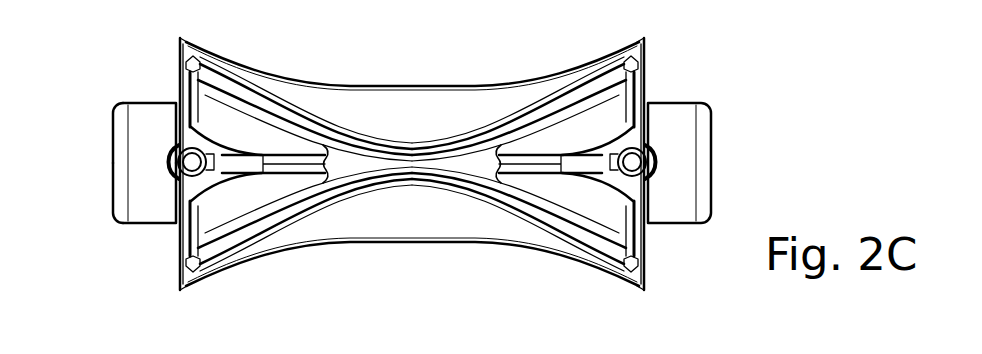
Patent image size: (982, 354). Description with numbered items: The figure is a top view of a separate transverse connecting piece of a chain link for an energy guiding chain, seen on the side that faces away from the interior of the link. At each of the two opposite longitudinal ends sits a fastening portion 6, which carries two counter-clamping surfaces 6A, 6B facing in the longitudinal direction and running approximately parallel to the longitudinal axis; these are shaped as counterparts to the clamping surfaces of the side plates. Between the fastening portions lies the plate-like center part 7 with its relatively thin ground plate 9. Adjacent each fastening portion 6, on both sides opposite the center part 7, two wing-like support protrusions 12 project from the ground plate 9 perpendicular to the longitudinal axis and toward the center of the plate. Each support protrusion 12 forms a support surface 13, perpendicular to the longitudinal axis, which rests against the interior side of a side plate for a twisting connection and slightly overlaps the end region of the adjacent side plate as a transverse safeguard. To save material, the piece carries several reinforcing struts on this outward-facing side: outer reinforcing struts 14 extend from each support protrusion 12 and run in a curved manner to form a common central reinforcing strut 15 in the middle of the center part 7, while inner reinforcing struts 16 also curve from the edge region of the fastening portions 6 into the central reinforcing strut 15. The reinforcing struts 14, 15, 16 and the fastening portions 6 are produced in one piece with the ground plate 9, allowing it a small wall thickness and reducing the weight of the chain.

The fastening portion 6 is at (407, 166).
The counter-clamping surface 6A is at (148, 96).
The counter-clamping surface 6B is at (148, 231).
The center part 7 is at (517, 254).
The ground plate 9 is at (433, 93).
The support protrusion 12 is at (193, 56).
The support surface 13 is at (655, 62).
The outer reinforcing strut 14 is at (243, 80).
The central reinforcing strut 15 is at (412, 160).
The inner reinforcing strut 16 is at (600, 137).